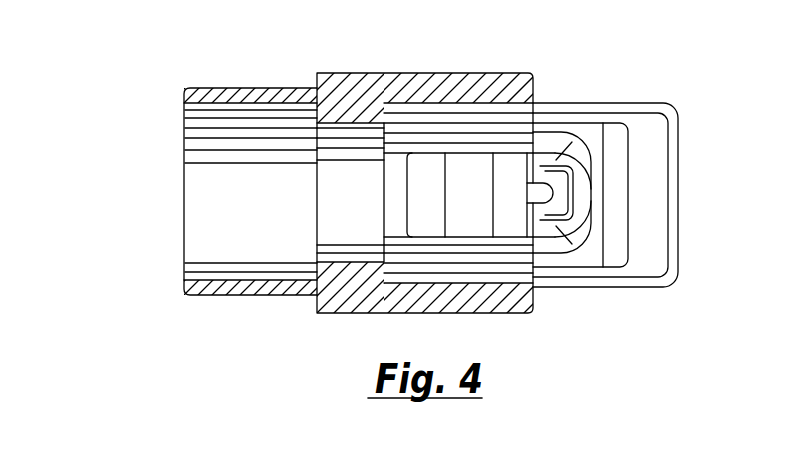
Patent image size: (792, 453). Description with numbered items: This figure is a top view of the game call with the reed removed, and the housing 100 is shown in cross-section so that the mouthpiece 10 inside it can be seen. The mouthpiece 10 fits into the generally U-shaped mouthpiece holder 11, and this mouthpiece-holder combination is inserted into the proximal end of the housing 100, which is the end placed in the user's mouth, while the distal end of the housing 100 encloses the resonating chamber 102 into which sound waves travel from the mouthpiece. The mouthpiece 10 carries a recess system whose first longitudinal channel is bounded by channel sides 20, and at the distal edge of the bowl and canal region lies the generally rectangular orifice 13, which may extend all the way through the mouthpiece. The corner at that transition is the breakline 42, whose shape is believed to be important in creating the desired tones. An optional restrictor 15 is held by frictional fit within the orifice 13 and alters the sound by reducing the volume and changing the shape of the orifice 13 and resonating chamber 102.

The housing 100 is at (268, 86).
The resonating chamber 102 is at (290, 201).
The channel sides 20 is at (420, 147).
The restrictor 15 is at (463, 175).
The orifice 13 is at (506, 181).
The breakline 42 is at (540, 182).
The mouthpiece 10 is at (587, 252).
The mouthpiece holder 11 is at (682, 104).